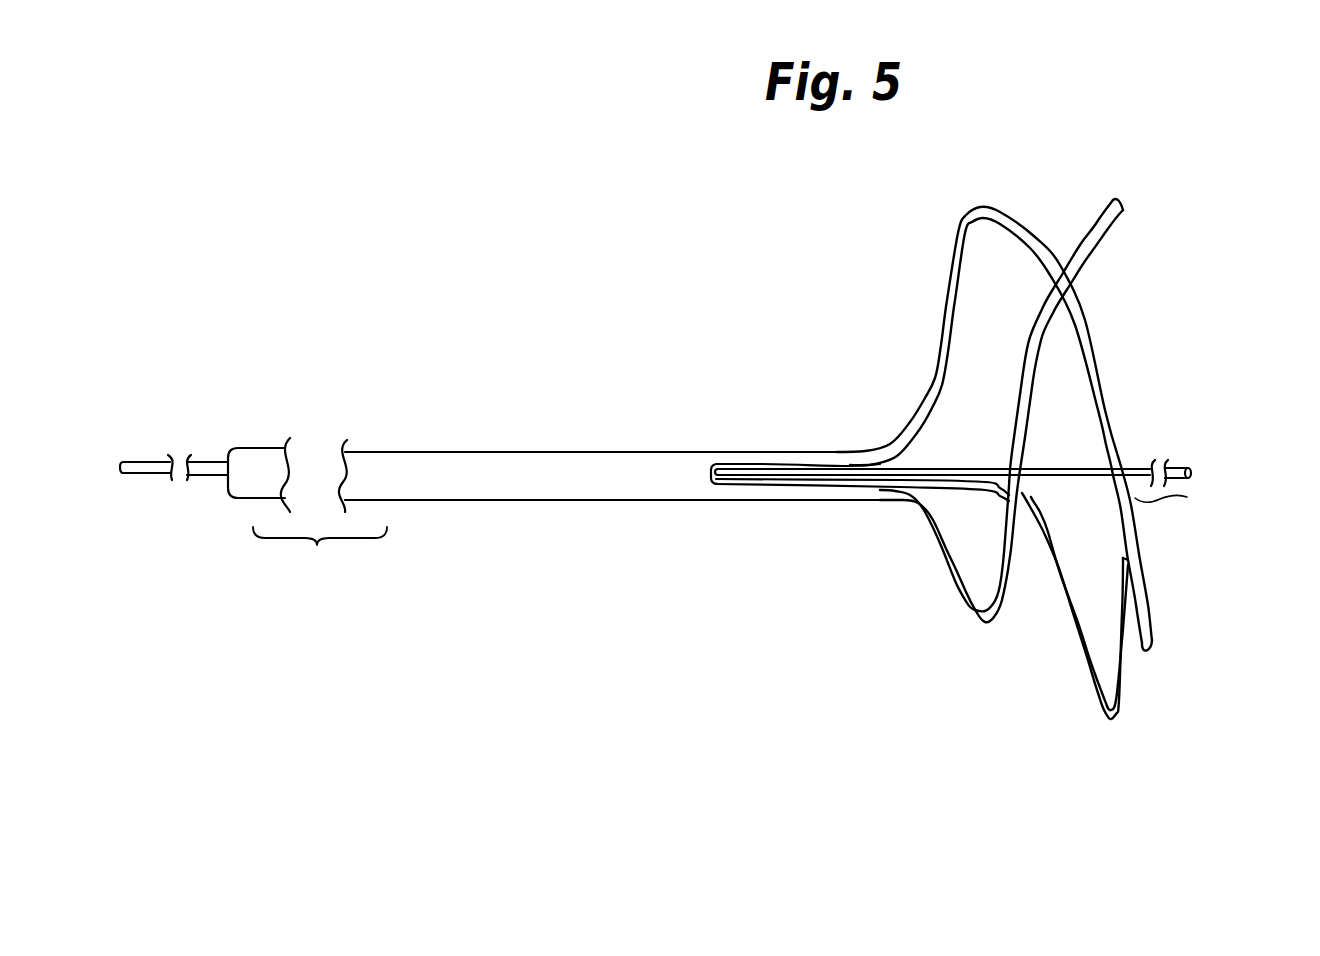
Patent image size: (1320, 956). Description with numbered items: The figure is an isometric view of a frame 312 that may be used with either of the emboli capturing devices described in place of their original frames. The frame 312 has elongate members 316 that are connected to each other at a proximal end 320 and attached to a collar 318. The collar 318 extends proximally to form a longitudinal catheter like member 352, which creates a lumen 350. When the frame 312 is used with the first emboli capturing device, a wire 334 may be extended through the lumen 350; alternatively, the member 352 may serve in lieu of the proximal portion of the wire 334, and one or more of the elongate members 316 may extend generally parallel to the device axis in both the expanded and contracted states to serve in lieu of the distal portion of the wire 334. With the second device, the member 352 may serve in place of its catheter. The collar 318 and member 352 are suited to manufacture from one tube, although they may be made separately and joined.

The frame 312 is at (662, 370).
The elongate members 316 is at (940, 344).
The collar 318 is at (714, 452).
The proximal end 320 is at (755, 493).
The wire 334 is at (1190, 468).
The lumen 350 is at (717, 487).
The longitudinal catheter like member 352 is at (490, 450).